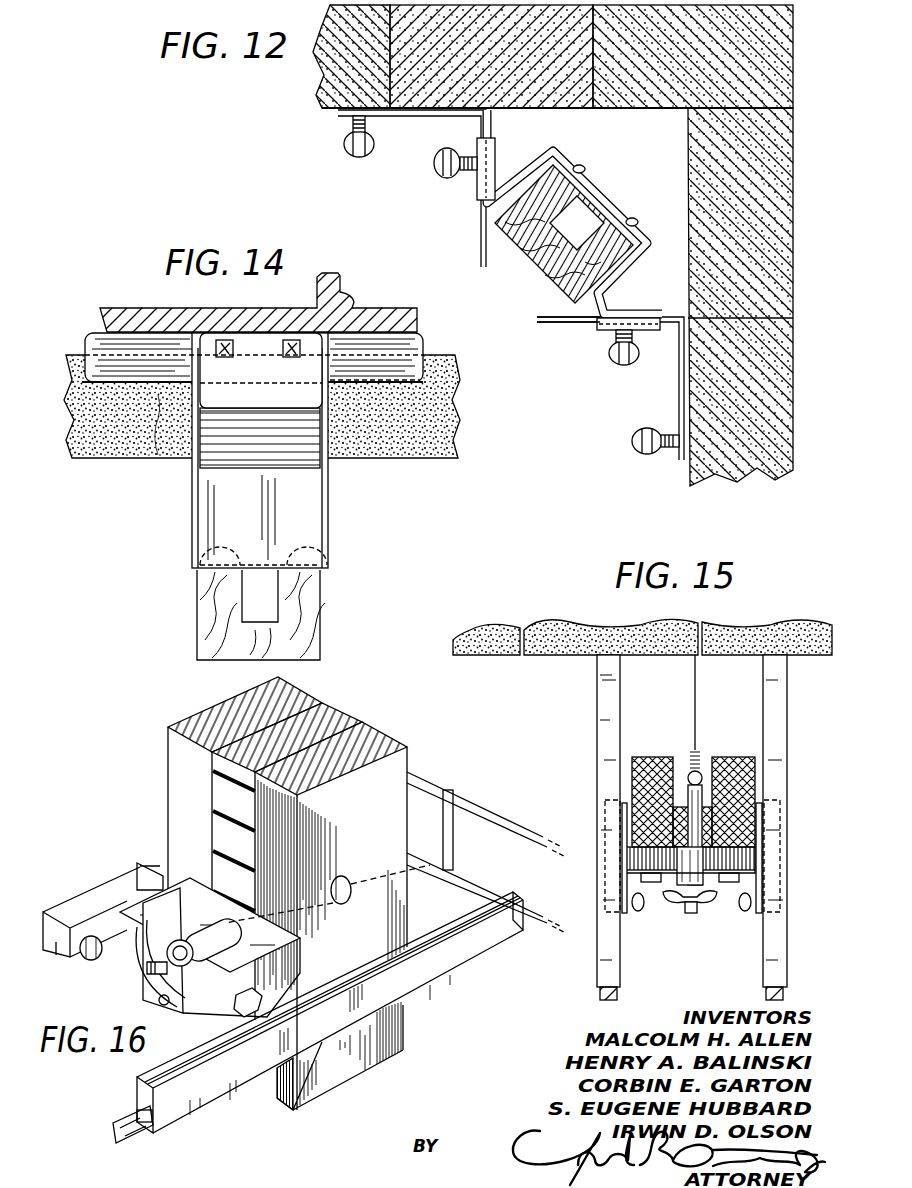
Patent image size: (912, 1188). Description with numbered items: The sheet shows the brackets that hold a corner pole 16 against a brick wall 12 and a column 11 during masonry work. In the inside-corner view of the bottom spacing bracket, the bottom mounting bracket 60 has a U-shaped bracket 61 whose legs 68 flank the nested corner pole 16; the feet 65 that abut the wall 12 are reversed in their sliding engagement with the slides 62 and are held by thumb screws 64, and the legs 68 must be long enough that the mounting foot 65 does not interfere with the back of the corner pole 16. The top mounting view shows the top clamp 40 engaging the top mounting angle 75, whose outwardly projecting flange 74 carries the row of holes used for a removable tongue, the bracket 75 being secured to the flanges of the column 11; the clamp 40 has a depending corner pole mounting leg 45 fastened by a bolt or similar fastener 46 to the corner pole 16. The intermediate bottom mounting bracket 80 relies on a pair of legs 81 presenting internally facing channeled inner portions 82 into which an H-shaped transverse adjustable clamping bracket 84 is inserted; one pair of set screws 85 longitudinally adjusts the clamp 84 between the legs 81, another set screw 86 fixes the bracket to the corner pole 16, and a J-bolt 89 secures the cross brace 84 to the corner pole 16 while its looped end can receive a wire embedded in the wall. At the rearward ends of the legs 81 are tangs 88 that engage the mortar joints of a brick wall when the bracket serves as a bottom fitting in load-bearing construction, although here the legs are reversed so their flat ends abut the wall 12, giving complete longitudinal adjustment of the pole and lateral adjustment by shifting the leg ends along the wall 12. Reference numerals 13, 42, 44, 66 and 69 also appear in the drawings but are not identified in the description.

In FIG. 14, the column 11 is at (380, 310).
In FIG. 12, the brick wall 12 is at (555, 100).
In FIG. 14, the brick wall 12 is at (113, 445).
In FIG. 16, the post with slats 13 is at (225, 820).
In FIG. 12, the corner pole 16 is at (536, 270).
In FIG. 14, the corner pole 16 is at (307, 602).
In FIG. 15, the corner pole 16 is at (660, 757).
In FIG. 14, the top clamp 40 is at (335, 490).
In FIG. 14, the bolts 42 is at (292, 340).
In FIG. 14, the clip plate 44 is at (212, 397).
In FIG. 14, the corner pole mounting leg 45 is at (200, 548).
In FIG. 14, the fastener 46 is at (330, 543).
In FIG. 12, the bottom mounting bracket 60 is at (560, 327).
In FIG. 12, the U-shaped bracket 61 is at (603, 203).
In FIG. 12, the slides 62 is at (492, 150).
In FIG. 12, the thumb screws 64 is at (436, 170).
In FIG. 12, the feet 65 is at (443, 118).
In FIG. 12, the anchor bolt 66 is at (348, 152).
In FIG. 12, the legs 68 is at (548, 165).
In FIG. 12, the pad 69 is at (585, 170).
In FIG. 14, the outwardly projecting flange 74 is at (423, 355).
In FIG. 14, the top mounting angle 75 is at (403, 377).
In FIG. 15, the intermediate bottom mounting bracket 80 is at (597, 720).
In FIG. 16, the intermediate bottom mounting bracket 80 is at (423, 990).
In FIG. 15, the legs 81 is at (773, 748).
In FIG. 16, the legs 81 is at (158, 868).
In FIG. 16, the channeled inner portions 82 is at (140, 1112).
In FIG. 15, the clamping bracket 84 is at (740, 885).
In FIG. 16, the clamping bracket 84 is at (250, 975).
In FIG. 15, the set screws 85 is at (638, 912).
In FIG. 16, the set screws 85 is at (99, 955).
In FIG. 16, the set screw 86 is at (138, 925).
In FIG. 15, the tangs 88 is at (765, 995).
In FIG. 16, the tangs 88 is at (140, 1138).
In FIG. 15, the J-bolt 89 is at (698, 790).
In FIG. 16, the J-bolt 89 is at (348, 878).